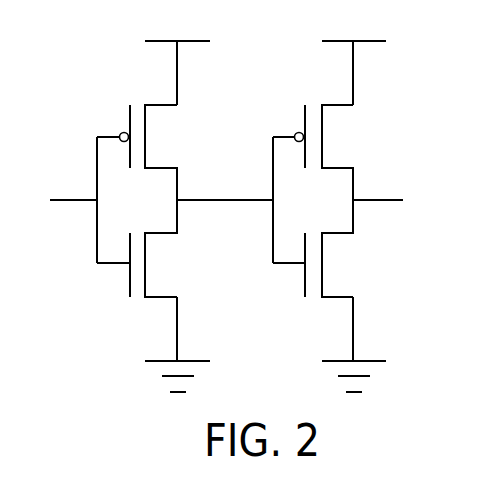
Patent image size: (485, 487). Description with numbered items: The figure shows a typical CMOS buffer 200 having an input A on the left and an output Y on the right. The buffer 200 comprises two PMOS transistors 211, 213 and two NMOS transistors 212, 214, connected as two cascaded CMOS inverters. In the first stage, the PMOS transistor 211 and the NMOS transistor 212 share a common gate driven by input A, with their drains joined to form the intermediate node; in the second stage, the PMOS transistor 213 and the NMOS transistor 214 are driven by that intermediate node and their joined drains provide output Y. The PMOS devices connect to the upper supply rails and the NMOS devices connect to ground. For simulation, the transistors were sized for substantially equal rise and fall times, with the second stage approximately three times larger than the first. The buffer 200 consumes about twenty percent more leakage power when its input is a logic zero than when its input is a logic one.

The CMOS buffer 200 is at (83, 50).
The PMOS transistor 211 is at (145, 152).
The NMOS transistor 212 is at (145, 248).
The PMOS transistor 213 is at (322, 152).
The NMOS transistor 214 is at (322, 248).